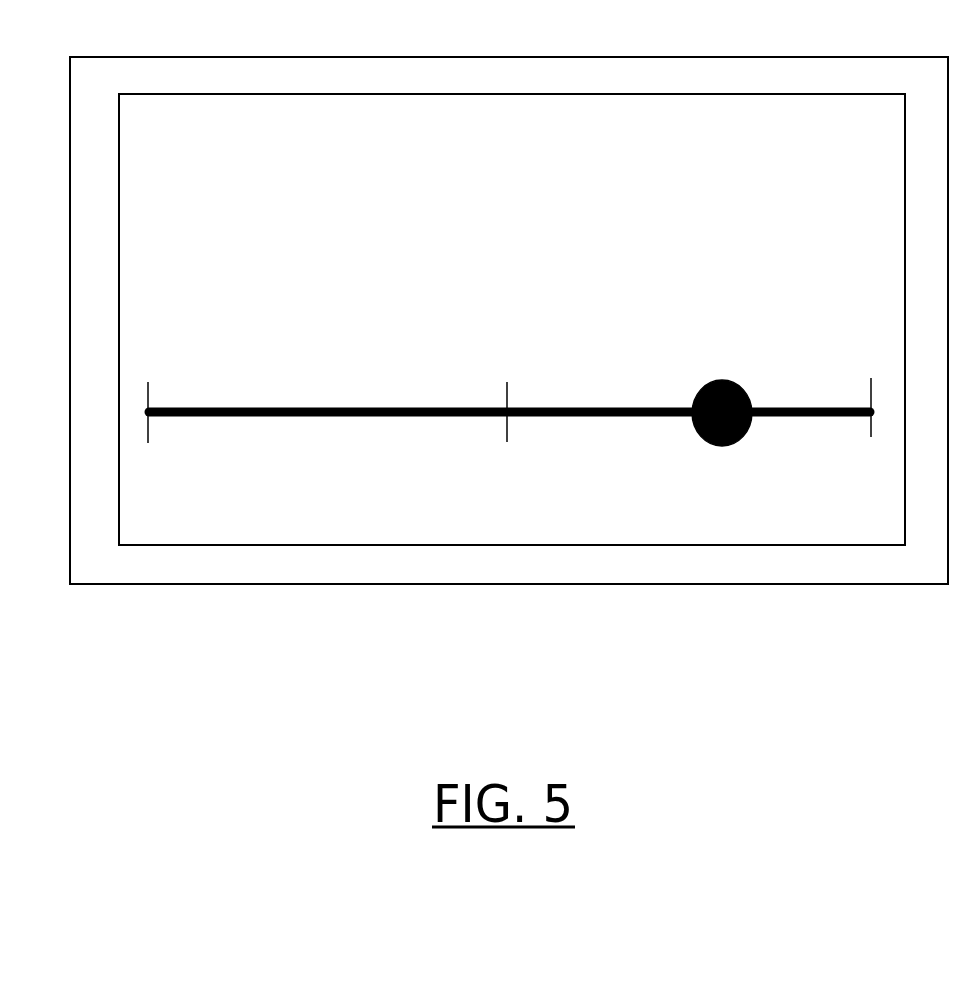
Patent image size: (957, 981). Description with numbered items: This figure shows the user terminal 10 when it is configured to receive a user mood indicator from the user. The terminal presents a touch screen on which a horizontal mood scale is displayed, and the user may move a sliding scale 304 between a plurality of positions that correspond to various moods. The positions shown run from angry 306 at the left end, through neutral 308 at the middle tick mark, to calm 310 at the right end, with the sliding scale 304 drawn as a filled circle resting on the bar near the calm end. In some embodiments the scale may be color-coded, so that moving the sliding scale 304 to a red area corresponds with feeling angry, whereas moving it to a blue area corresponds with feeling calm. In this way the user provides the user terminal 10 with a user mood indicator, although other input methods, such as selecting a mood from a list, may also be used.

The user terminal 10 is at (509, 299).
The sliding scale 304 is at (677, 390).
The angry 306 is at (193, 375).
The neutral 308 is at (476, 373).
The calm 310 is at (815, 368).